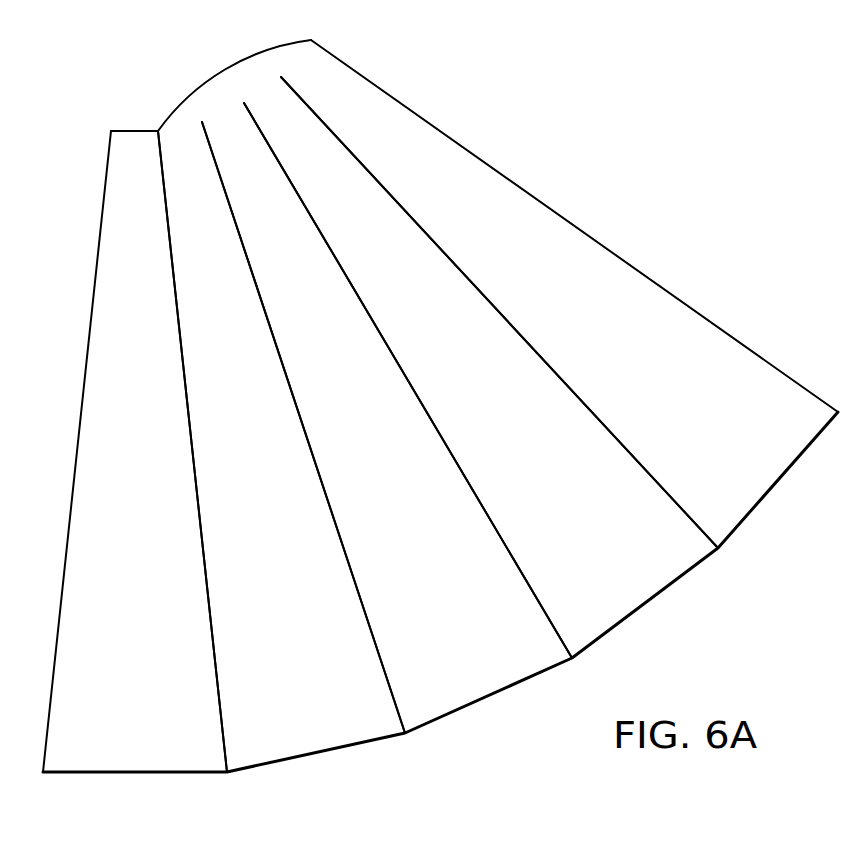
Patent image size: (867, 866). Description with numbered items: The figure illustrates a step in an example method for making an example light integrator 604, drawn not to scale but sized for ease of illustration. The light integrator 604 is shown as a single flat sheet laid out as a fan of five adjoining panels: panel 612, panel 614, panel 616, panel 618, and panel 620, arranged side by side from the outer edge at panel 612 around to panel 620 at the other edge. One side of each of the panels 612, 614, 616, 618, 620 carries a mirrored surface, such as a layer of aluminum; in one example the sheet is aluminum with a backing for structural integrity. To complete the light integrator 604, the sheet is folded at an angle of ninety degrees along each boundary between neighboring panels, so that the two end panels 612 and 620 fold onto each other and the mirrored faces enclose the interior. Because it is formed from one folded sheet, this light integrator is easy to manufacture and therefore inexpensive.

The light integrator 604 is at (629, 170).
The panel 612 is at (773, 470).
The panel 614 is at (642, 593).
The panel 616 is at (486, 687).
The panel 618 is at (315, 745).
The panel 620 is at (132, 763).